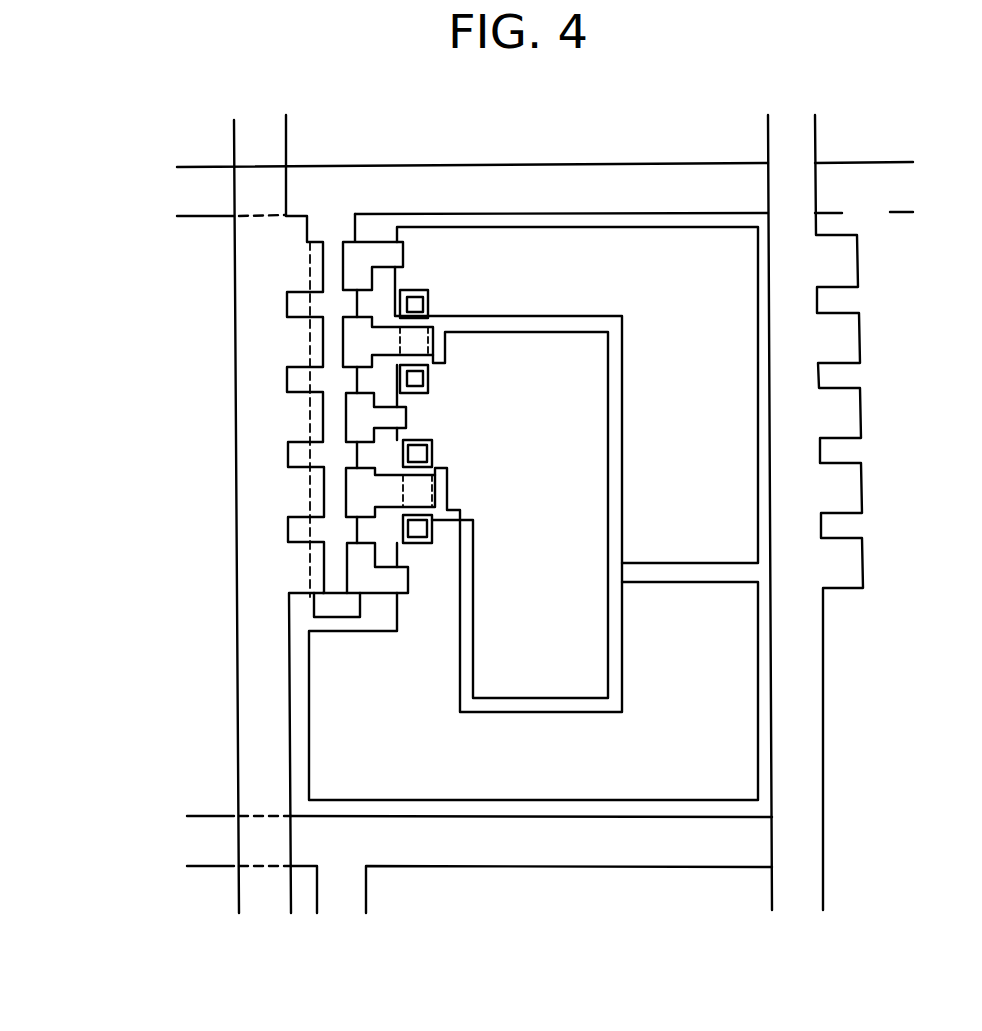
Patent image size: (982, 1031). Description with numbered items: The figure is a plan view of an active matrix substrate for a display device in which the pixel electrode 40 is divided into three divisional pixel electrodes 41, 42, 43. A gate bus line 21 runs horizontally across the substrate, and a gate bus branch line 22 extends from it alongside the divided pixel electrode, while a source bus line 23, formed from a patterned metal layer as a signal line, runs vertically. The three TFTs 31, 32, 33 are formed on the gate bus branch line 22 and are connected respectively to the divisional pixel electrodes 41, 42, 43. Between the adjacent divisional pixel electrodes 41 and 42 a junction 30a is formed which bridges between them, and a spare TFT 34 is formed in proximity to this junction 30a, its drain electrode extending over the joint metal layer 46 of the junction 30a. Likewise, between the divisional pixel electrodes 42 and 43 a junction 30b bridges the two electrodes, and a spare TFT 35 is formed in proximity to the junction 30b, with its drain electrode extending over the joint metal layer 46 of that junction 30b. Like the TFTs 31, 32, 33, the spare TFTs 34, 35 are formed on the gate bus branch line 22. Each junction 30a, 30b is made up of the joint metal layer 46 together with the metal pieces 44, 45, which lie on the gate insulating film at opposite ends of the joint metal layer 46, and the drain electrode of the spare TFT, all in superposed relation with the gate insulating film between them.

The gate bus line 21 is at (185, 190).
The gate bus branch line 22 is at (343, 610).
The source bus line 23 is at (270, 888).
The junction 30a is at (448, 486).
The junction 30b is at (448, 343).
The main TFT 31 is at (330, 575).
The main TFT 32 is at (330, 418).
The TFT 33 is at (330, 268).
The spare TFT 34 is at (330, 493).
The spare TFT 35 is at (330, 340).
The pixel electrode 40 is at (533, 591).
The divisional pixel electrode 41 is at (517, 787).
The divisional pixel electrode 42 is at (575, 688).
The divisional pixel electrode 43 is at (700, 550).
The metal piece 44 is at (428, 378).
The metal piece 45 is at (428, 303).
The joint metal layer 46 is at (422, 291).